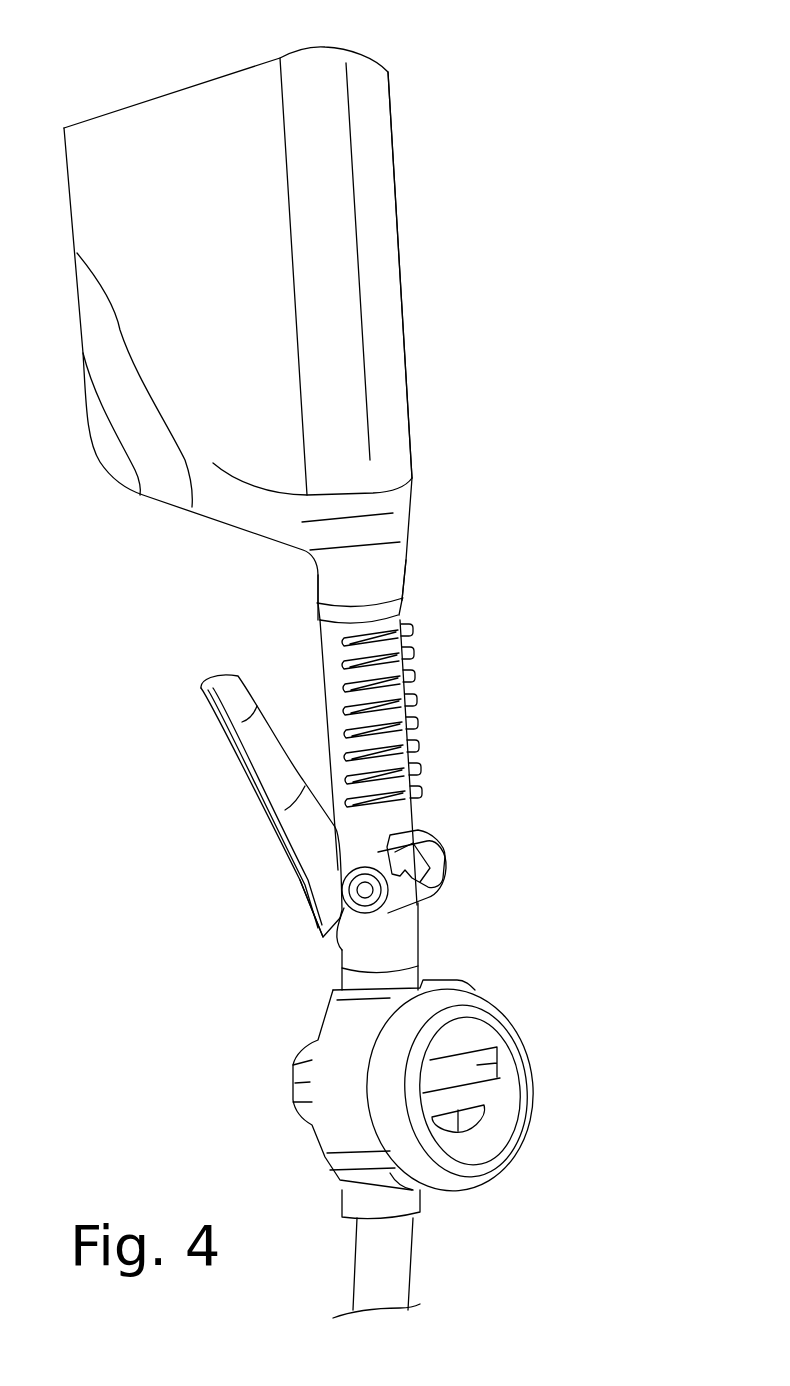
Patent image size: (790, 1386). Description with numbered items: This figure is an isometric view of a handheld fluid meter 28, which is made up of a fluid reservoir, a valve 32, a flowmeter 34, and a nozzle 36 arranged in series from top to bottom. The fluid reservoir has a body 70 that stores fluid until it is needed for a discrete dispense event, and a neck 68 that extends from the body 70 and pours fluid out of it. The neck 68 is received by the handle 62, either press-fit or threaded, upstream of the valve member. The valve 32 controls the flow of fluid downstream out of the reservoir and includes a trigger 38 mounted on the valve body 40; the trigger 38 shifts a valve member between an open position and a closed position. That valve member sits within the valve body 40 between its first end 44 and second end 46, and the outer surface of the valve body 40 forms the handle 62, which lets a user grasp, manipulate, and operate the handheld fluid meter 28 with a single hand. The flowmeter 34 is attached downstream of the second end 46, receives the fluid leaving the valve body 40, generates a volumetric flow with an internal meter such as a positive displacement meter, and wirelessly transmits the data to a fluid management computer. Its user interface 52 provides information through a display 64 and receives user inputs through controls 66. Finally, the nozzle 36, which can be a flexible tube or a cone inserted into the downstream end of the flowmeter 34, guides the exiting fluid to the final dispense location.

The handheld fluid meter 28 is at (370, 682).
The body 70 is at (365, 132).
The neck 68 is at (390, 553).
The first end 44 is at (407, 600).
The valve 32 is at (333, 784).
The valve body 40 is at (418, 690).
The handle 62 is at (415, 750).
The trigger 38 is at (220, 682).
The second end 46 is at (398, 943).
The flowmeter 34 is at (485, 1089).
The user interface 52 is at (500, 1088).
The display 64 is at (477, 1068).
The controls 66 is at (483, 1115).
The nozzle 36 is at (390, 1257).